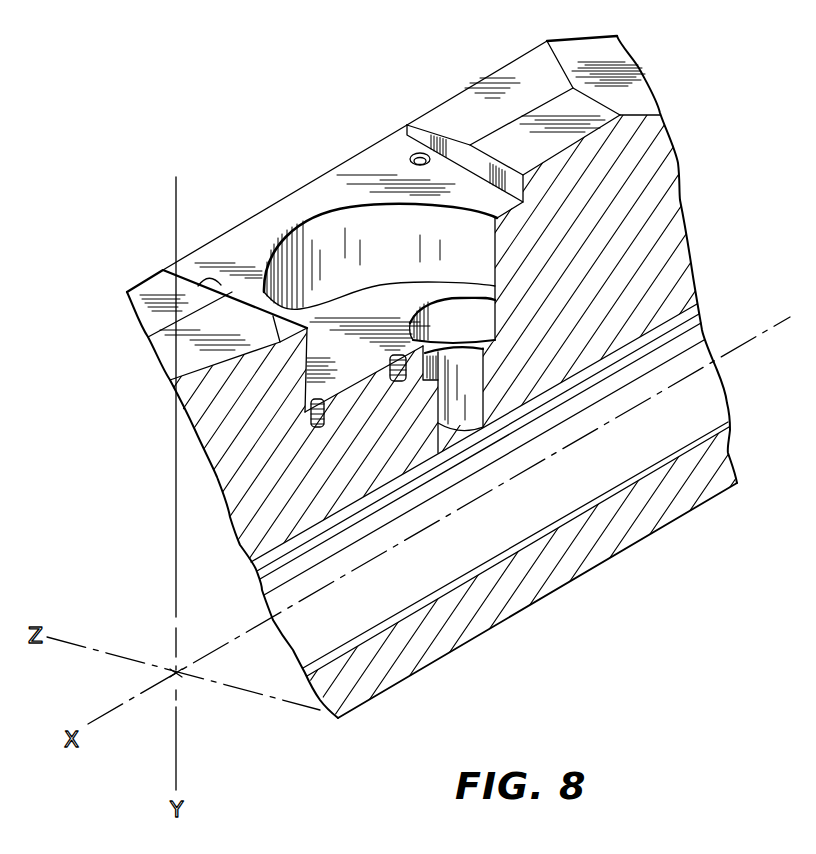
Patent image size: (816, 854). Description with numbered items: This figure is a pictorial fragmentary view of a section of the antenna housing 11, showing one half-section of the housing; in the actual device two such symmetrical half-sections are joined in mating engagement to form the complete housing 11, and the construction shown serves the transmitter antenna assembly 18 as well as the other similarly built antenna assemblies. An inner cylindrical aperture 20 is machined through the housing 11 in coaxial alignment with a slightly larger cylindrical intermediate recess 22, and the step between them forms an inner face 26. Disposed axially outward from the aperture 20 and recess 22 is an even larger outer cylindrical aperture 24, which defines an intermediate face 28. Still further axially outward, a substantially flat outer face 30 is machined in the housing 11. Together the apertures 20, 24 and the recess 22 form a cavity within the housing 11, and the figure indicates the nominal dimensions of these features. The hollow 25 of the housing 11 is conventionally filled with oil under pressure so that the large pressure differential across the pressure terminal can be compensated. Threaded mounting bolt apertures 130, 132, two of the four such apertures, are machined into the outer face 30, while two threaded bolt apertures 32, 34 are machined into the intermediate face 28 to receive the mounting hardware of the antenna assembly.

The antenna housing 11 is at (497, 70).
The transmitter antenna assembly 18 is at (351, 233).
The inner cylindrical aperture 20 is at (468, 372).
The intermediate recess 22 is at (477, 312).
The outer cylindrical aperture 24 is at (478, 243).
The hollow 25 is at (582, 488).
The inner face 26 is at (473, 335).
The intermediate face 28 is at (336, 370).
The outer face 30 is at (302, 210).
The threaded bolt aperture 32 is at (310, 422).
The threaded bolt aperture 34 is at (390, 368).
The threaded mounting bolt aperture 130 is at (210, 280).
The threaded mounting bolt aperture 132 is at (410, 153).